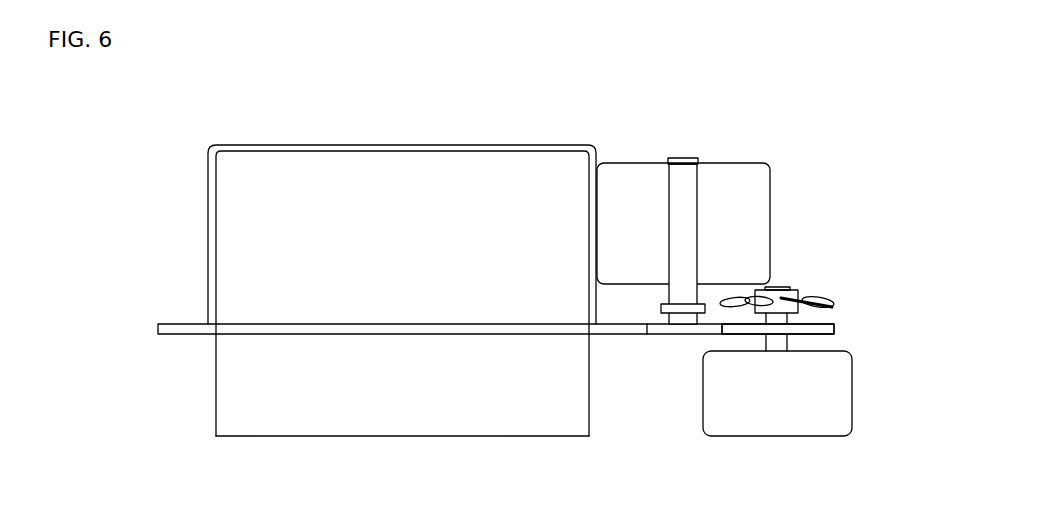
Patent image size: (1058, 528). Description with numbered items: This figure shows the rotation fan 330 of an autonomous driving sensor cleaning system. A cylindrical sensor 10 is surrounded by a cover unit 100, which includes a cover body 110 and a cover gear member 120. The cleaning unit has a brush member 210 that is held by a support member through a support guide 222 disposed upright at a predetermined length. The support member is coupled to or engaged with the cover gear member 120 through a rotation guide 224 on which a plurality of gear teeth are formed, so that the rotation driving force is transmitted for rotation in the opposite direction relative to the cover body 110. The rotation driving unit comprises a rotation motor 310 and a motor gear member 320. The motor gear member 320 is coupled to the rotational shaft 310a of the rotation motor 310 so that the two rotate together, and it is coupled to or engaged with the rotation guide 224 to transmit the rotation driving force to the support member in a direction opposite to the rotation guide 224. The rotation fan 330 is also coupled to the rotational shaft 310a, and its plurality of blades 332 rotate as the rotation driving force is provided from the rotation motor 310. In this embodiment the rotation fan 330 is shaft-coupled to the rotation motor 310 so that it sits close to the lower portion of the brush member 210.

The sensor 10 is at (400, 417).
The cover unit 100 is at (132, 210).
The cover body 110 is at (211, 233).
The cover gear member 120 is at (165, 327).
The brush member 210 is at (742, 169).
The support guide 222 is at (683, 162).
The rotation guide 224 is at (680, 325).
The rotation motor 310 is at (777, 430).
The rotational shaft 310a is at (776, 340).
The motor gear member 320 is at (834, 328).
The rotation fan 330 is at (797, 292).
The blades 332 is at (823, 297).